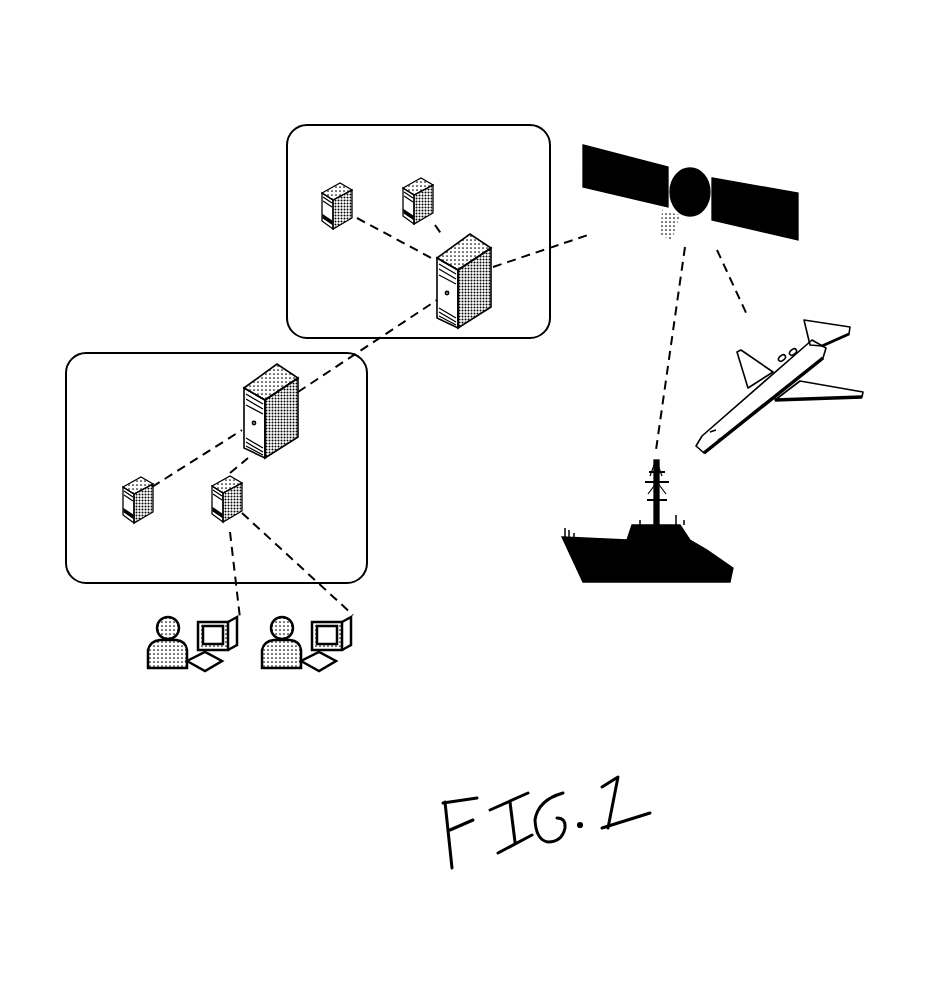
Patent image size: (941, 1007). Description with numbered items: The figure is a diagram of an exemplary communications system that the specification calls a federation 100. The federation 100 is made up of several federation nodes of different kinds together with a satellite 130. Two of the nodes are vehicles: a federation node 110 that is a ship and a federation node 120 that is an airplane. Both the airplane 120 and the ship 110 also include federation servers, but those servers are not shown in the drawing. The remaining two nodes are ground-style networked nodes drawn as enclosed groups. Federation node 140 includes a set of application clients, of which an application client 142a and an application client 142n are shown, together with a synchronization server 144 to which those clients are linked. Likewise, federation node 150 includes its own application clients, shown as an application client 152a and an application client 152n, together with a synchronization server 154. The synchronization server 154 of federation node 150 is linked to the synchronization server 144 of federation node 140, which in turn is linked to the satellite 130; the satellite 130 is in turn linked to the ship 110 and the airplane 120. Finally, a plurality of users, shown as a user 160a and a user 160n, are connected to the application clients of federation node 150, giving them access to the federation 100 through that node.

The federation 100 is at (840, 105).
The federation node (ship) 110 is at (695, 588).
The federation node (airplane) 120 is at (783, 410).
The satellite 130 is at (740, 238).
The federation node 140 is at (387, 125).
The application client 142a is at (337, 178).
The application client 142n is at (425, 177).
The synchronization server 144 is at (472, 223).
The federation node 150 is at (140, 353).
The application client 152a is at (142, 527).
The application client 152n is at (225, 528).
The synchronization server 154 is at (277, 462).
The user 160a is at (157, 673).
The user 160n is at (342, 667).